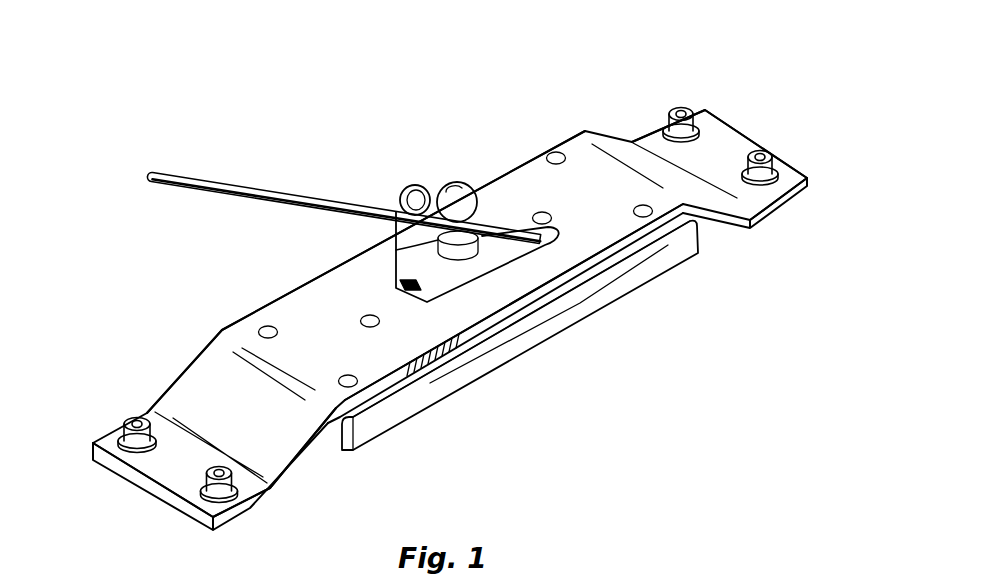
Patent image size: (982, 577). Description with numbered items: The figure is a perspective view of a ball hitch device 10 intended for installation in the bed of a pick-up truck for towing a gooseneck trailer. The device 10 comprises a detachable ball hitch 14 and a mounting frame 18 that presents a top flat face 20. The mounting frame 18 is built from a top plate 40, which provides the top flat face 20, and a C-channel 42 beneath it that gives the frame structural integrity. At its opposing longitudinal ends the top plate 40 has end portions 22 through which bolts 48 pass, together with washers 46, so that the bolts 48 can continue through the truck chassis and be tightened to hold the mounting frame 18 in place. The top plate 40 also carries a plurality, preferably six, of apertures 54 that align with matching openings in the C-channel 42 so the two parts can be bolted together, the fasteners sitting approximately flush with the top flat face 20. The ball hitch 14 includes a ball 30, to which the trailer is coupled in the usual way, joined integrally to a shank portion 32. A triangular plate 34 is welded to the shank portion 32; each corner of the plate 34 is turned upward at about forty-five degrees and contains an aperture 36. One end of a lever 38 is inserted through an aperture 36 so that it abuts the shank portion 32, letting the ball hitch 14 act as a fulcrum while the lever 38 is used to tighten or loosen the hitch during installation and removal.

The device 10 is at (435, 102).
The detachable ball hitch 14 is at (467, 185).
The mounting frame 18 is at (233, 326).
The top flat face 20 is at (365, 300).
The end tab 22 is at (121, 421).
The ball 30 is at (446, 194).
The shank portion 32 is at (396, 250).
The triangular plate 34 is at (543, 297).
The aperture 36 is at (401, 190).
The lever 38 is at (200, 178).
The top plate 40 is at (308, 455).
The C-channel 42 is at (473, 368).
The washers 46 is at (203, 485).
The bolts 48 is at (137, 417).
The apertures 54 is at (348, 374).